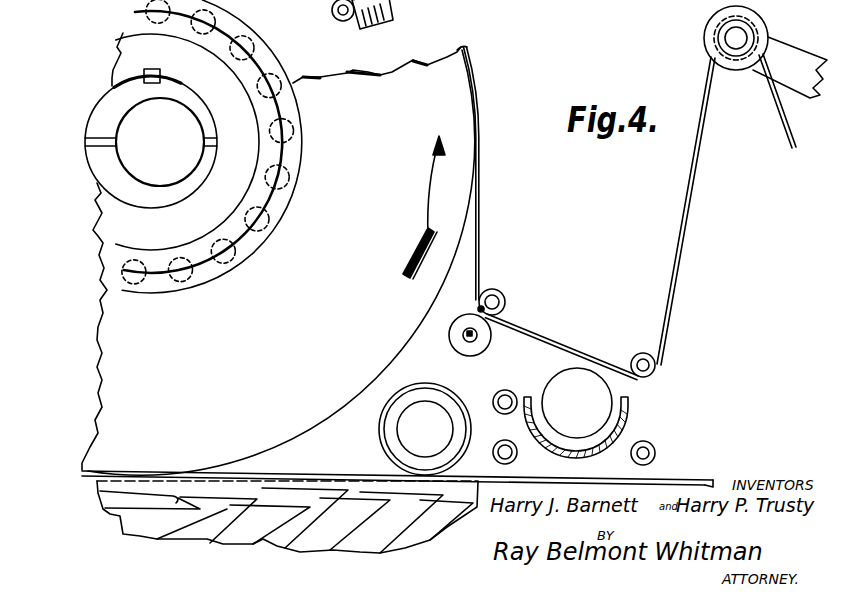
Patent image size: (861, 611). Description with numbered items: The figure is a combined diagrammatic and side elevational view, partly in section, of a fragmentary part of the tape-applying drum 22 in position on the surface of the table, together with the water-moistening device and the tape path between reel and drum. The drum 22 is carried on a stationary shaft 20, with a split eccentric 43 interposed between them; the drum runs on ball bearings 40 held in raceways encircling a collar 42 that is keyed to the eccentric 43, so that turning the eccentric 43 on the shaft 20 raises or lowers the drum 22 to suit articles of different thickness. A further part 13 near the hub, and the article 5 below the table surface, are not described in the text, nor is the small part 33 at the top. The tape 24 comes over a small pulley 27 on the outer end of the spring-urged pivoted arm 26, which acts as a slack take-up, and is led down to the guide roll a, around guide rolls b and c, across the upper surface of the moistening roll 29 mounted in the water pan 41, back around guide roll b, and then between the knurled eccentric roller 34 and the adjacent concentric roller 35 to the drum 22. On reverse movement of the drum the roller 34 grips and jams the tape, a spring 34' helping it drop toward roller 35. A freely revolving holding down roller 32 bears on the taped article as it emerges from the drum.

The paper sheets 5 is at (345, 540).
The sleeve 13 is at (178, 92).
The stationary shaft 20 is at (128, 125).
The tape-applying drum 22 is at (282, 343).
The tape 24 is at (478, 238).
The pivoted arm 26 is at (812, 55).
The small pulley 27 is at (765, 28).
The moistening roll 29 is at (600, 392).
The holding down roller 32 is at (380, 440).
The guide roller 33 is at (377, 14).
The eccentric roller 34 is at (511, 287).
The spring 34' is at (458, 314).
The concentric roller 35 is at (483, 343).
The ball bearings 40 is at (293, 132).
The water pan 41 is at (620, 441).
The collar 42 is at (232, 192).
The split eccentric 43 is at (130, 198).
The guide roll a is at (655, 362).
The guide roll b is at (494, 456).
The guide roll c is at (496, 397).